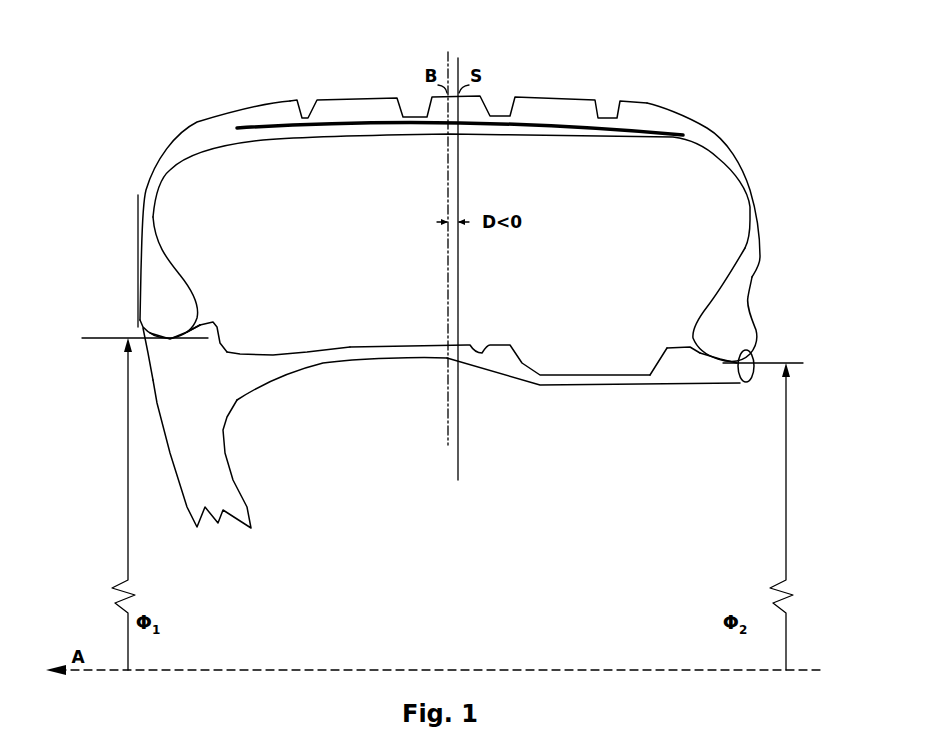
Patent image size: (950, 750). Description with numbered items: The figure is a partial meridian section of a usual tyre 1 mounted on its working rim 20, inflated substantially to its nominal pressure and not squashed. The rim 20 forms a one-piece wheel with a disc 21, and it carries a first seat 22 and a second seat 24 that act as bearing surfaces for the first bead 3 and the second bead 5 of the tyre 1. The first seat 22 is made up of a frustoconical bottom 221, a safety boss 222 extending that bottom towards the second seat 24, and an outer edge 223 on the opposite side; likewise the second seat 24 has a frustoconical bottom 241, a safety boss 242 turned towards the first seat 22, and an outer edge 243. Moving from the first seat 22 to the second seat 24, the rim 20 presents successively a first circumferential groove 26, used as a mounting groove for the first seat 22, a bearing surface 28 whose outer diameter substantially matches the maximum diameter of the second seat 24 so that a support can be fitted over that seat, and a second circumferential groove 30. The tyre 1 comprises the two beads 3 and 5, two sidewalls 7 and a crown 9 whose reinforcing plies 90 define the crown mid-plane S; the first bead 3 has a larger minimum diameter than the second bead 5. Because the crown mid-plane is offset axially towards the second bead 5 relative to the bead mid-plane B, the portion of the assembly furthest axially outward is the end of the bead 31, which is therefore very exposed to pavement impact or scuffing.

The tyre 1 is at (540, 61).
The first bead 3 is at (162, 302).
The second bead 5 is at (728, 322).
The sidewall 7 is at (148, 217).
The crown 9 is at (385, 108).
The reinforcing plies 90 is at (645, 130).
The end of the bead 31 is at (137, 298).
The working rim 20 is at (582, 415).
The disc 21 is at (200, 493).
The first seat 22 is at (187, 353).
The frustoconical bottom 221 is at (178, 334).
The safety boss 222 is at (212, 330).
The outer edge 223 is at (150, 333).
The second seat 24 is at (707, 370).
The frustoconical bottom 241 is at (715, 360).
The safety boss 242 is at (678, 353).
The outer edge 243 is at (743, 387).
The first circumferential groove 26 is at (277, 343).
The bearing surface 28 is at (402, 351).
The second circumferential groove 30 is at (585, 377).